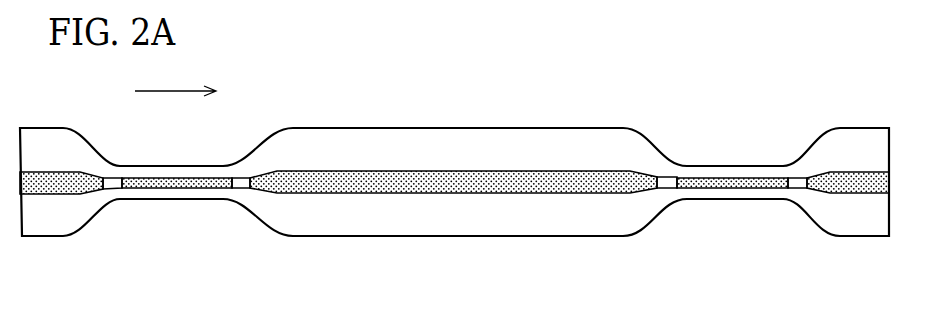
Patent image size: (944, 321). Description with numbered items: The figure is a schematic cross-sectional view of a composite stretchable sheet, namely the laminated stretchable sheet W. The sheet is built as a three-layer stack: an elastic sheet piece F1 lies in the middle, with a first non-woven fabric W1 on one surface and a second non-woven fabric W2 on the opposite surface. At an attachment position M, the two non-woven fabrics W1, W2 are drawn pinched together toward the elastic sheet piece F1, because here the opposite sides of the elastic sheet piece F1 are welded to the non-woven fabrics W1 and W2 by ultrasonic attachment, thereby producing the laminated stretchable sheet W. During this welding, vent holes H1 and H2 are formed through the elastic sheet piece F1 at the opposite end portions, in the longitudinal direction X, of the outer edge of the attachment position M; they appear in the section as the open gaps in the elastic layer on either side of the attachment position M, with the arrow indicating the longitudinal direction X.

The laminated stretchable sheet W is at (604, 127).
The first non-woven fabric W1 is at (506, 135).
The second non-woven fabric W2 is at (530, 237).
The elastic sheet piece F1 is at (378, 185).
The attachment position M is at (176, 180).
The vent hole H1 is at (245, 180).
The vent hole H2 is at (110, 180).
The longitudinal direction X is at (175, 91).